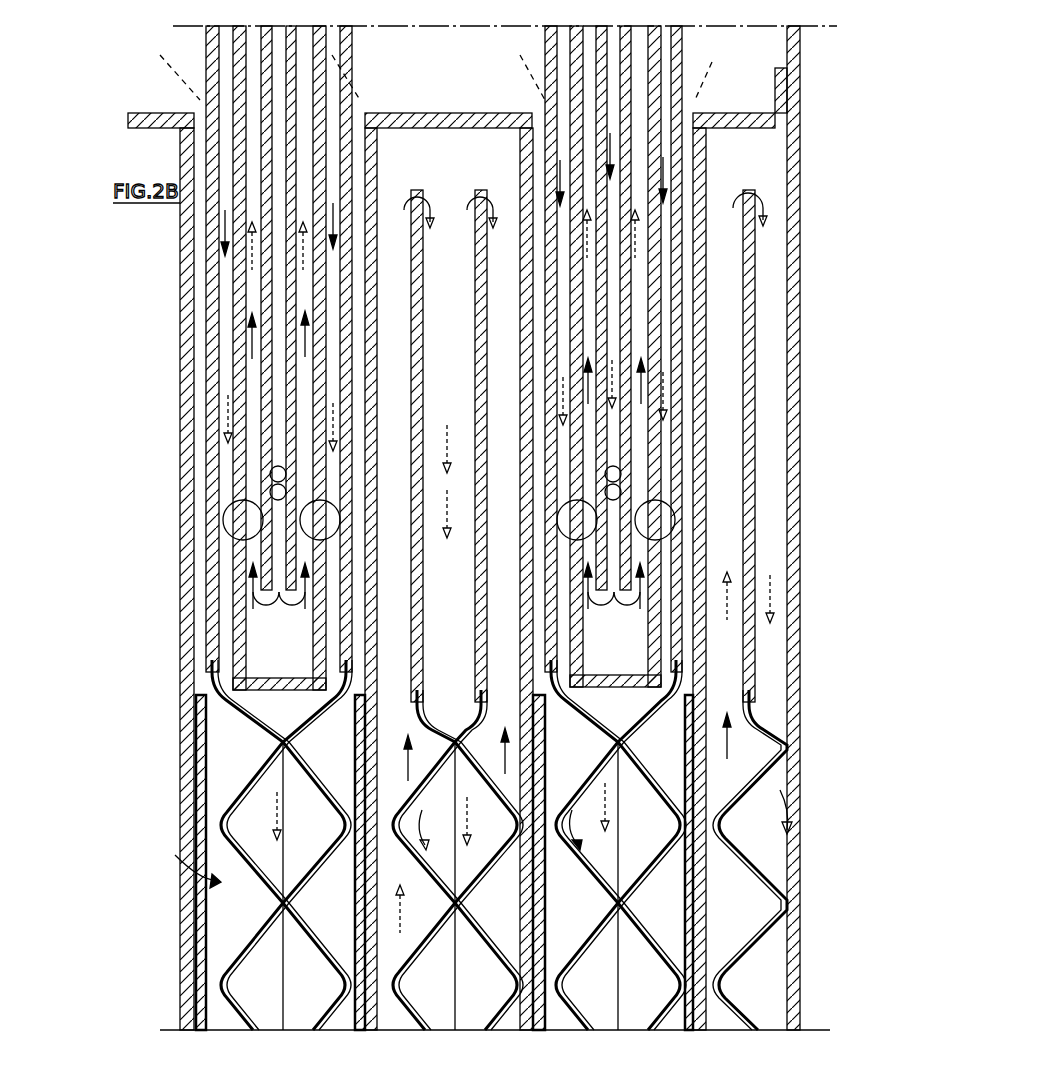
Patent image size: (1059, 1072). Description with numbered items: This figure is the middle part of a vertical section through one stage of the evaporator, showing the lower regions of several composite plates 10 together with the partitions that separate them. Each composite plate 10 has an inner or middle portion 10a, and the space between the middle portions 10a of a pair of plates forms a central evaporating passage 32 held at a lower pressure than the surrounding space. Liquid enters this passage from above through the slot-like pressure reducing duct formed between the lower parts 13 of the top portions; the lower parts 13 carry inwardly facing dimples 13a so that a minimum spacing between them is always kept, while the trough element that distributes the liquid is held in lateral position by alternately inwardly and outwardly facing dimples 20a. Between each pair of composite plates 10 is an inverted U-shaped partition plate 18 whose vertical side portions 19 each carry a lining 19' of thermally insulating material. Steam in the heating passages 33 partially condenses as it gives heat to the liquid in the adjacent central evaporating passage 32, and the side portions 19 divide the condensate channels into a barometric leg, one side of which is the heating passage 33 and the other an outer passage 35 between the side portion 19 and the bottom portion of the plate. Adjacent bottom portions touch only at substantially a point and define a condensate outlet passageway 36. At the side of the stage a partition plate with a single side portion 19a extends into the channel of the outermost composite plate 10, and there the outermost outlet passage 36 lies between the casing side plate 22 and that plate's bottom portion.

The composite plate 10 is at (686, 56).
The middle portion 10a is at (652, 655).
The lower part 13 is at (292, 413).
The inwardly facing dimple 13a is at (272, 480).
The partition plate 18 is at (160, 112).
The side portion 19 is at (410, 528).
The lining 19' is at (460, 860).
The side portion 19a is at (705, 415).
The dimple 20a is at (233, 517).
The side plate 22 is at (800, 443).
The central evaporating passage 32 is at (250, 830).
The heating passage 33 is at (340, 745).
The outer passage 35 is at (395, 600).
The condensate outlet passageway 36 is at (447, 395).